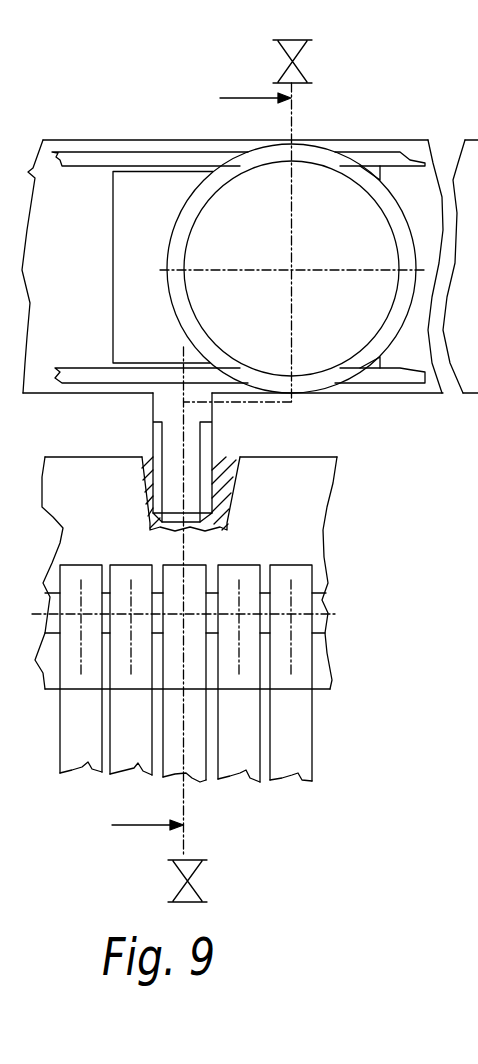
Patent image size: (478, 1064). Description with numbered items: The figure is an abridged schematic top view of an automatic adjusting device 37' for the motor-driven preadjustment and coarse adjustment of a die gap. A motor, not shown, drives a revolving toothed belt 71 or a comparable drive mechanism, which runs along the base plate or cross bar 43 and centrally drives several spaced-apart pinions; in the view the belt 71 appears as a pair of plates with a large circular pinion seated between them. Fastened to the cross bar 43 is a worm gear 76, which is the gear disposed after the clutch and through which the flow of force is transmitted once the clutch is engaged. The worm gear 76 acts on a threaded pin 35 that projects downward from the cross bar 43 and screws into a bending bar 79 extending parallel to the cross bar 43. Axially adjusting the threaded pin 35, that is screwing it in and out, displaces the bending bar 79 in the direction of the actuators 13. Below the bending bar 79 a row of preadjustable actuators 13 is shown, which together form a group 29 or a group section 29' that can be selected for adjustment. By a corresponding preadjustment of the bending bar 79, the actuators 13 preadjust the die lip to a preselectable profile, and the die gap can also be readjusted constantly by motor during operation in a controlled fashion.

The automatic adjusting device 37' is at (291, 203).
The revolving toothed belt 71 is at (372, 165).
The cross bar 43 is at (84, 178).
The worm gear 76 is at (160, 182).
The threaded pin 35 is at (197, 452).
The bending bar 79 is at (318, 480).
The group of actuators 29 is at (246, 619).
The group section 29' is at (215, 619).
The actuator 13 is at (292, 749).